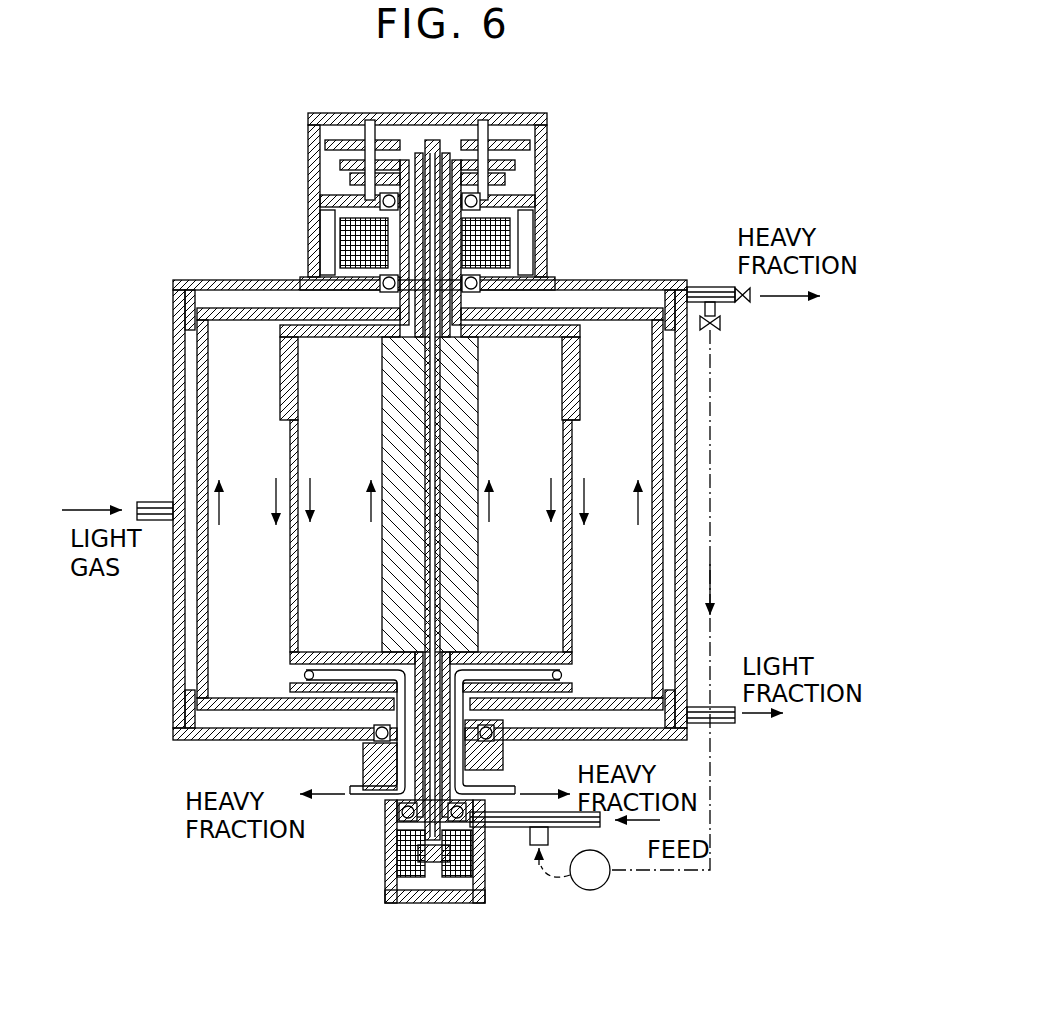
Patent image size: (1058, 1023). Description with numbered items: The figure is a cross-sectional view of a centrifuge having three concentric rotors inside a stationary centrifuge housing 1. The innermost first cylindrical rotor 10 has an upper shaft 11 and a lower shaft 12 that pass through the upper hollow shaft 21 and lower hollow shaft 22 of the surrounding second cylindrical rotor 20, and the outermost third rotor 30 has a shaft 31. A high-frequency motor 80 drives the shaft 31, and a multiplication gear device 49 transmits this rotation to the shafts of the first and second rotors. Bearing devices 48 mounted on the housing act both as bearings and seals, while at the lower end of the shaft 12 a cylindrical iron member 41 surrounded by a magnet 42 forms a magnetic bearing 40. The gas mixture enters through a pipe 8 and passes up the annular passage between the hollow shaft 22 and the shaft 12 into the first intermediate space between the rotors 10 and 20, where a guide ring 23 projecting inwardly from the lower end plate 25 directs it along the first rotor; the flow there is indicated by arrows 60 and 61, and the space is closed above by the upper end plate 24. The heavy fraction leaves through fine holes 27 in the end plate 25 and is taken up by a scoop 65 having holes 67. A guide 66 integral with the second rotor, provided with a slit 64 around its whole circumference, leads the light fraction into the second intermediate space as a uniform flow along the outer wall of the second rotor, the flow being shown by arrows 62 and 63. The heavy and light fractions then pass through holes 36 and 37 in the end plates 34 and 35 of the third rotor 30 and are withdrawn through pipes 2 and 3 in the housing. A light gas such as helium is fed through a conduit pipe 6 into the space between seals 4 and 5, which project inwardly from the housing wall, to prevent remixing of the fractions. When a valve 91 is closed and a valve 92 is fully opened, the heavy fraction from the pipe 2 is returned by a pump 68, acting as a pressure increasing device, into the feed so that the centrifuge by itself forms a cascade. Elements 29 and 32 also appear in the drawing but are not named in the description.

The centrifuge housing 1 is at (680, 440).
The pipe 2 is at (712, 288).
The pipe 3 is at (708, 707).
The seal 4 is at (198, 296).
The seal 5 is at (190, 710).
The conduit pipe 6 is at (155, 502).
The pipe 8 is at (581, 846).
The first cylindrical rotor 10 is at (470, 425).
The upper shaft 11 is at (416, 135).
The lower shaft 12 is at (438, 855).
The second cylindrical rotor 20 is at (572, 448).
The upper hollow shaft 21 is at (448, 128).
The lower hollow shaft 22 is at (480, 828).
The guide ring 23 is at (375, 654).
The upper end plate 24 is at (343, 337).
The lower end plate 25 is at (508, 653).
The fine holes 27 is at (312, 670).
The lower rotor plate 29 is at (572, 686).
The third rotor 30 is at (675, 590).
The shaft 31 is at (473, 128).
The bearing housing 32 is at (503, 758).
The end plate 34 is at (602, 320).
The end plate 35 is at (595, 710).
The holes 36 is at (225, 318).
The holes 37 is at (225, 702).
The magnetic bearing 40 is at (418, 880).
The cylindrical iron member 41 is at (436, 862).
The magnet 42 is at (397, 862).
The bearing devices 48 is at (383, 200).
The multiplication gear device 49 is at (520, 180).
The arrow 60 is at (371, 505).
The arrow 61 is at (310, 488).
The arrow 62 is at (276, 490).
The arrow 63 is at (219, 518).
The slit 64 is at (578, 395).
The scoop 65 is at (512, 700).
The guide 66 is at (576, 420).
The holes 67 is at (563, 680).
The pump 68 is at (598, 888).
The high-frequency motor 80 is at (510, 215).
The valve 91 is at (722, 312).
The valve 92 is at (712, 330).